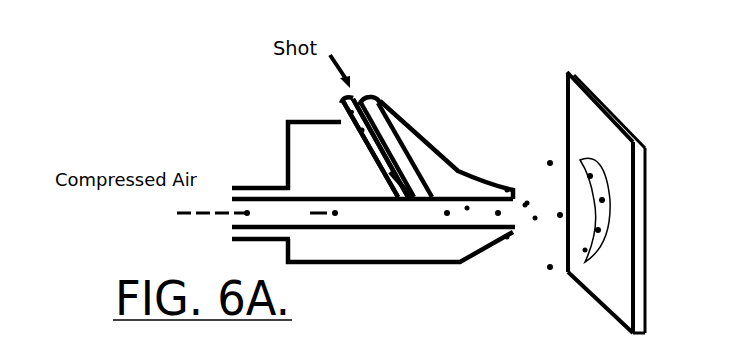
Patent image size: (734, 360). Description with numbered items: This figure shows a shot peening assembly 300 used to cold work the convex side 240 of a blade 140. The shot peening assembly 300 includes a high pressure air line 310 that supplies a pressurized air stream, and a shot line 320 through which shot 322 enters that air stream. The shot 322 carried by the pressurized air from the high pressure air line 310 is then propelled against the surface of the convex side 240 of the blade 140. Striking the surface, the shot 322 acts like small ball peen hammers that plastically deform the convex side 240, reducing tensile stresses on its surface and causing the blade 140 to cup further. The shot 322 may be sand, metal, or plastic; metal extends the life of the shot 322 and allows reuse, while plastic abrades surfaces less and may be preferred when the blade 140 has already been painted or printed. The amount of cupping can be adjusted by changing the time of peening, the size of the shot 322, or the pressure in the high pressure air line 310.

The shot peening assembly 300 is at (327, 164).
The high pressure air line 310 is at (226, 226).
The shot line 320 is at (332, 141).
The shot 322 is at (439, 130).
The convex side 240 is at (536, 177).
The blade 140 is at (573, 176).